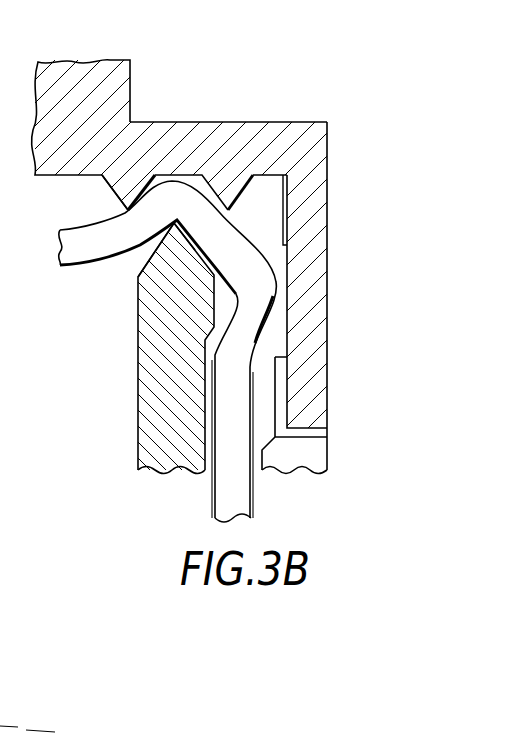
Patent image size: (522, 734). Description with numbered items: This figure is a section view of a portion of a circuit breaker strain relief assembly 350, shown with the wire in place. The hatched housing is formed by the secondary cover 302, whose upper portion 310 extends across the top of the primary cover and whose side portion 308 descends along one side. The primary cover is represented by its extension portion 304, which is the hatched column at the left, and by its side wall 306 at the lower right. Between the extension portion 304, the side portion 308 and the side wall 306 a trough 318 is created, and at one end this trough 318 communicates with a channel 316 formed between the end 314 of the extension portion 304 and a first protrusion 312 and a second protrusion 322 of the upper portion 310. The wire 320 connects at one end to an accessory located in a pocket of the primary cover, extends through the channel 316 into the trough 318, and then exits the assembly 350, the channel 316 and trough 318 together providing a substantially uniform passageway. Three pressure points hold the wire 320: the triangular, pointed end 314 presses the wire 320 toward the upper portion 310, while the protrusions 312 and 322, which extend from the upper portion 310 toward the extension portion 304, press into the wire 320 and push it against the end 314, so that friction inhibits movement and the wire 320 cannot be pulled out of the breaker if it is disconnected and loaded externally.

The assembly 350 is at (250, 40).
The secondary cover 302 is at (217, 121).
The extension portion 304 is at (160, 383).
The side wall 306 is at (312, 452).
The side portion 308 is at (318, 238).
The upper portion 310 is at (110, 157).
The first protrusion 312 is at (124, 190).
The end 314 is at (175, 258).
The channel 316 is at (159, 177).
The trough 318 is at (275, 307).
The wire 320 is at (98, 250).
The second protrusion 322 is at (235, 178).